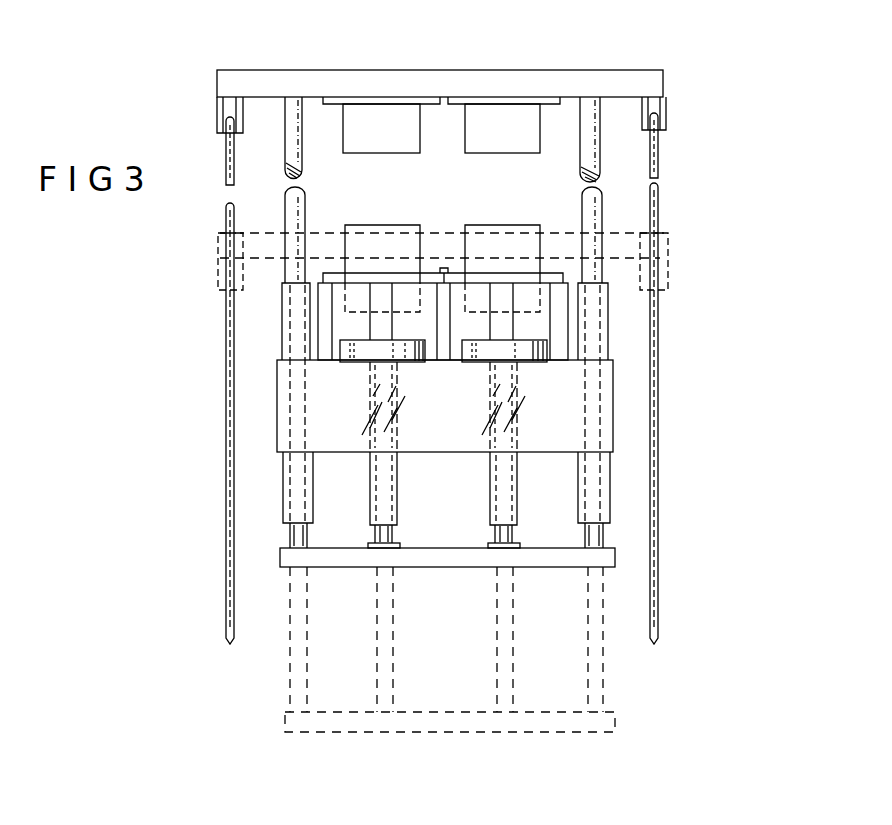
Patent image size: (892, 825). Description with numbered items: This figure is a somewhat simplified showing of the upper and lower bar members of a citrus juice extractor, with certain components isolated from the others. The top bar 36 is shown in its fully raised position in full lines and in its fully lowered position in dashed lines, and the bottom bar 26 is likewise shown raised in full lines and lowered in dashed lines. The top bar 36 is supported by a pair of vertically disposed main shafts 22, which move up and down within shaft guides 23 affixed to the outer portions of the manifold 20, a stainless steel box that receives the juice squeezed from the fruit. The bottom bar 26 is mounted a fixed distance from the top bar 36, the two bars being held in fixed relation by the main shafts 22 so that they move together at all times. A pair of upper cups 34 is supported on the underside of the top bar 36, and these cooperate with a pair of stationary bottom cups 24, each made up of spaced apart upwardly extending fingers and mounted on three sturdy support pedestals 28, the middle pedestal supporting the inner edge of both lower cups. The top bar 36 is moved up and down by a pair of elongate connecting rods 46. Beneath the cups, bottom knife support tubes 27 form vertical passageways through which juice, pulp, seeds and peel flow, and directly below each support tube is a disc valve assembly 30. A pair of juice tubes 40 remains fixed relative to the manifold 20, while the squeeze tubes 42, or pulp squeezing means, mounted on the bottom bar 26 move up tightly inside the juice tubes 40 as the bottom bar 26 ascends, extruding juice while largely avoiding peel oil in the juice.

The manifold 20 is at (335, 416).
The main shafts 22 is at (291, 121).
The shaft guides 23 is at (290, 318).
The bottom cups 24 is at (383, 240).
The bottom bar 26 is at (560, 558).
The bottom knife support tubes 27 is at (505, 328).
The support pedestals 28 is at (558, 298).
The disc valve assemblies 30 is at (365, 352).
The upper cups 34 is at (364, 118).
The top bar 36 is at (549, 80).
The juice tubes 40 is at (373, 490).
The squeeze tubes 42 is at (372, 532).
The connecting rods 46 is at (658, 143).